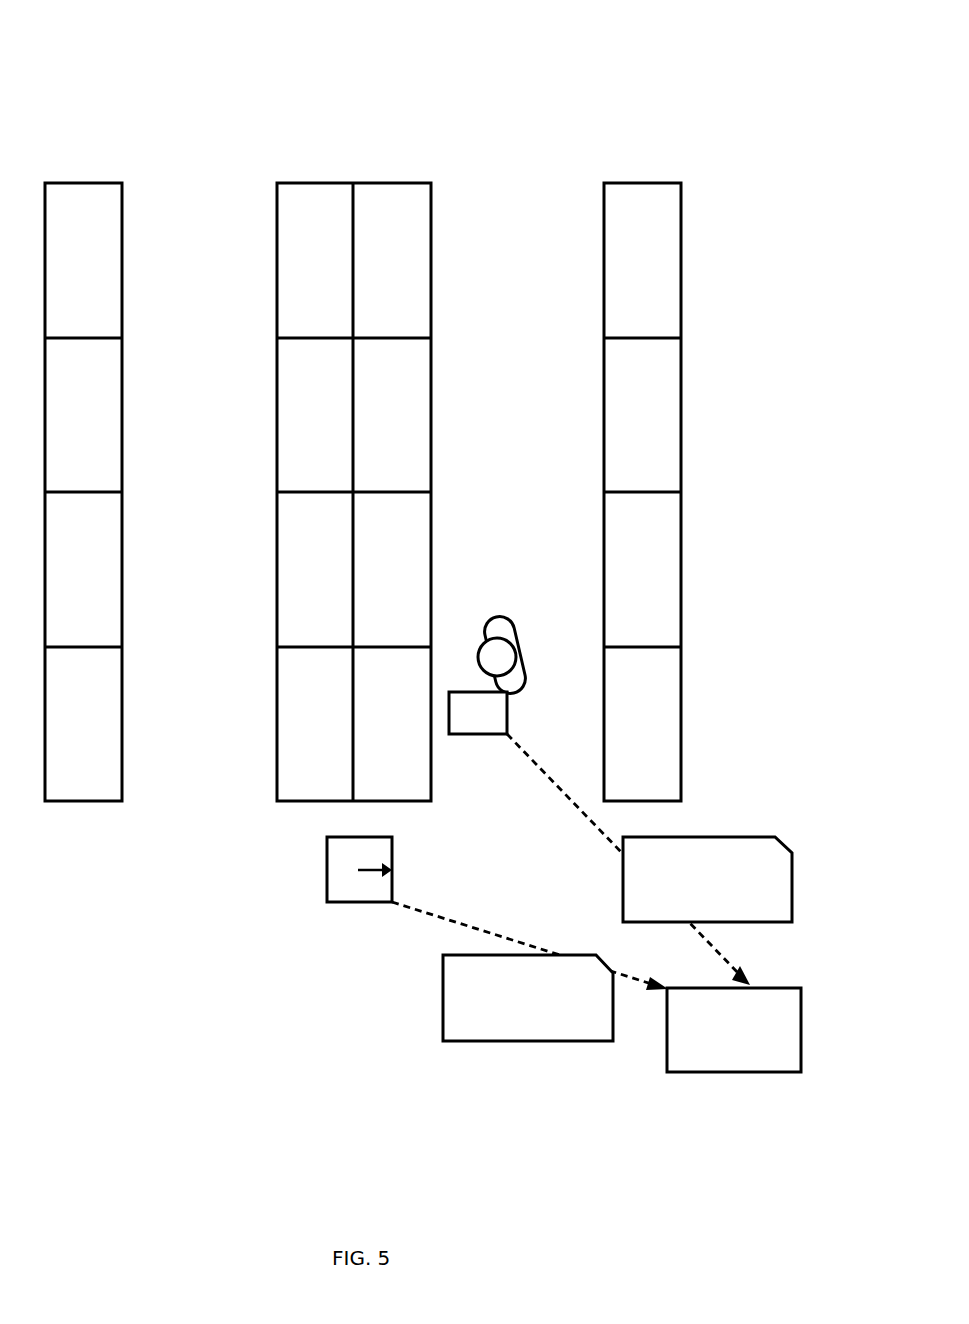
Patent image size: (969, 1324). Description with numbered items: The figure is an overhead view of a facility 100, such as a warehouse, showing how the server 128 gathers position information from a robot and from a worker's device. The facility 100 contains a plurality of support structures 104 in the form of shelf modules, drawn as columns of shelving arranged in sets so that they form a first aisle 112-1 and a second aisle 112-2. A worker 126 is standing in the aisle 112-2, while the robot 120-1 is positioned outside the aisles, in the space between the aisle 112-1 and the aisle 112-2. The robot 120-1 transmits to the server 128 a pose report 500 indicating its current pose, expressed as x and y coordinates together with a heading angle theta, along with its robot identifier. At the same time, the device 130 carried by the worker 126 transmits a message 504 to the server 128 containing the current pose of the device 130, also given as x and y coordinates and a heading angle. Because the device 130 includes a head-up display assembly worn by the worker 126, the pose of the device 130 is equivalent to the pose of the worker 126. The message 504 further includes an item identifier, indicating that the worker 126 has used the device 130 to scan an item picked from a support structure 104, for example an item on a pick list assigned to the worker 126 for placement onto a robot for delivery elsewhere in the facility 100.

The facility 100 is at (275, 92).
The support structure 104 is at (668, 277).
The aisle 112-1 is at (228, 455).
The aisle 112-2 is at (538, 455).
The robot 120-1 is at (336, 913).
The worker 126 is at (508, 617).
The server 128 is at (753, 1029).
The device 130 is at (496, 728).
The pose report 500 is at (490, 983).
The message 504 is at (669, 866).